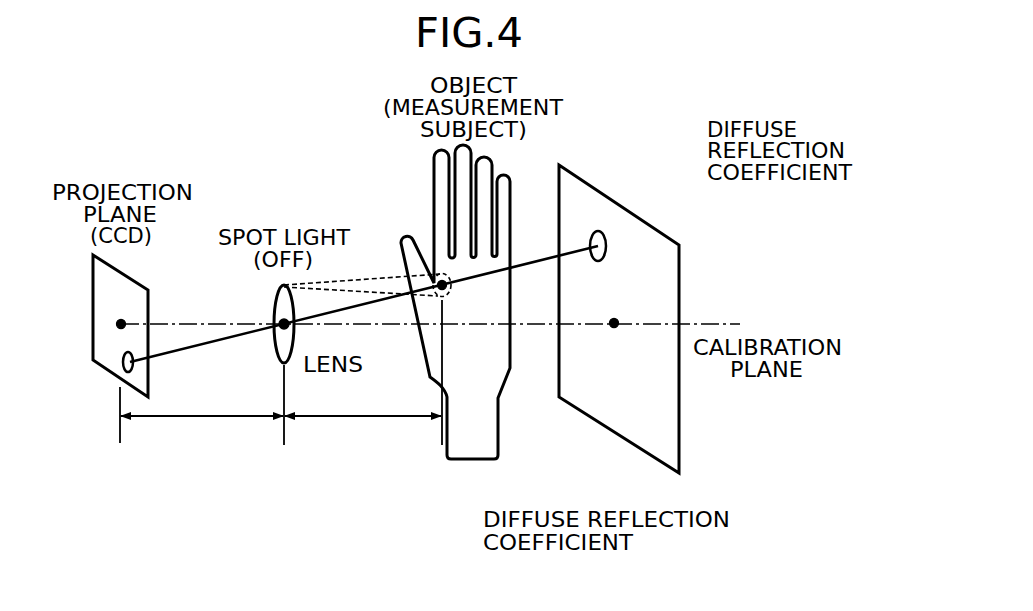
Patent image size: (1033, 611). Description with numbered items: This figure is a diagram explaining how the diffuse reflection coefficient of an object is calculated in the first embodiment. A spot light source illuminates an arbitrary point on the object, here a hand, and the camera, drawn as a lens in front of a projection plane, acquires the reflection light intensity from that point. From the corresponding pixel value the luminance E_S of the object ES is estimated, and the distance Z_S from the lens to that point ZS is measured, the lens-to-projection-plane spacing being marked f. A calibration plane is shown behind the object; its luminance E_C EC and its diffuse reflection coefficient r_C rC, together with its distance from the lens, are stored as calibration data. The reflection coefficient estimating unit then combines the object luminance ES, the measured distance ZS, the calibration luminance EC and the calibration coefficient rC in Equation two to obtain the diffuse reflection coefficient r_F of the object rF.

The luminance of the object ES is at (437, 278).
The luminance of the calibration plane EC is at (598, 231).
The diffuse reflection coefficient on the calibration plane rC is at (658, 252).
The diffuse reflection coefficient of the object rF is at (467, 305).
The focal length (projection plane to lens distance) f is at (202, 427).
The distance from the lens of the camera to an arbitrary point on the object ZS is at (363, 430).